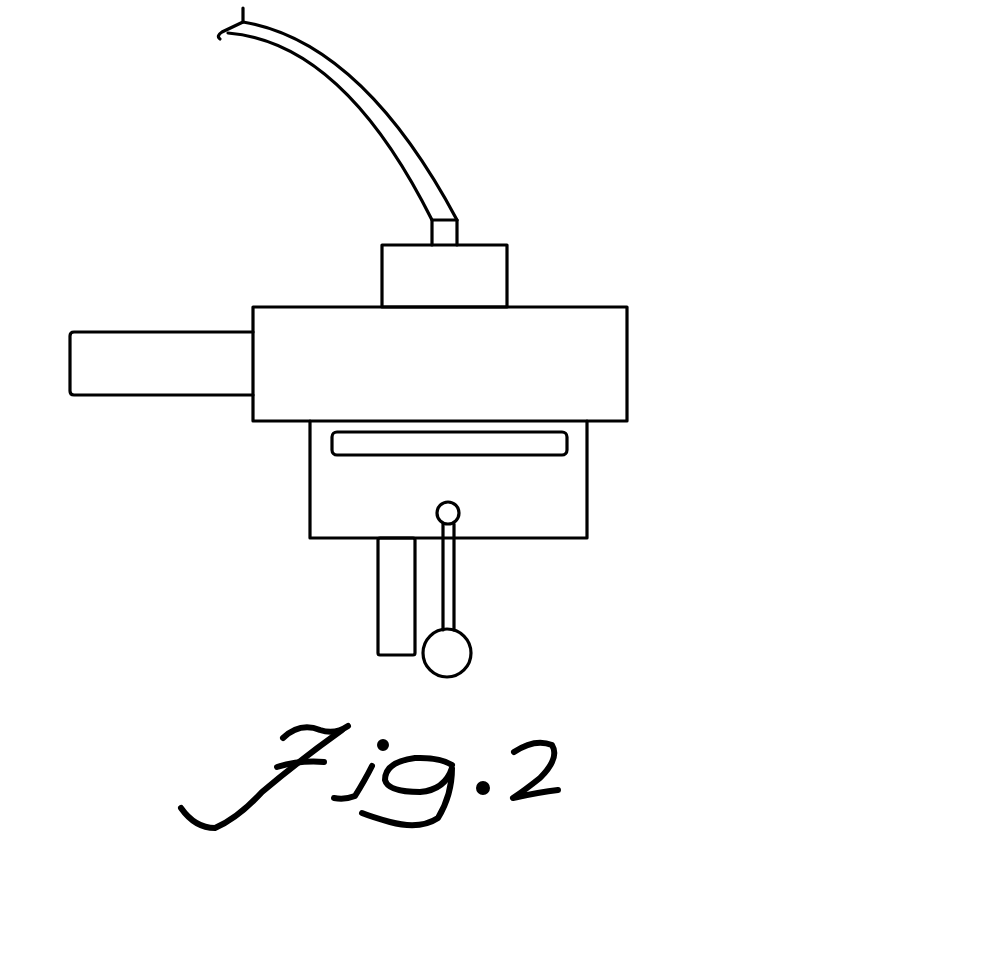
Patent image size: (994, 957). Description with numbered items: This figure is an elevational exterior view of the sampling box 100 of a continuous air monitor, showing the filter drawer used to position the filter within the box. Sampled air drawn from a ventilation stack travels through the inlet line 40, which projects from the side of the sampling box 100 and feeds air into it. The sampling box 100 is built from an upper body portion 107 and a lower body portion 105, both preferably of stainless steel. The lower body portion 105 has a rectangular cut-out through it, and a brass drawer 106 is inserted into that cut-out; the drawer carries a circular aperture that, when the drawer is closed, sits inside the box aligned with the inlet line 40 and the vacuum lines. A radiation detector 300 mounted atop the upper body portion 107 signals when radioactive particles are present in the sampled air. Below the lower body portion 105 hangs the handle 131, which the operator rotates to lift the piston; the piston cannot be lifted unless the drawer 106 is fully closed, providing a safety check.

The line 40 is at (143, 338).
The sampling box 100 is at (715, 344).
The lower body portion 105 is at (303, 490).
The drawer 106 is at (332, 443).
The upper body portion 107 is at (540, 331).
The handle 131 is at (469, 656).
The radiation detector 300 is at (493, 267).